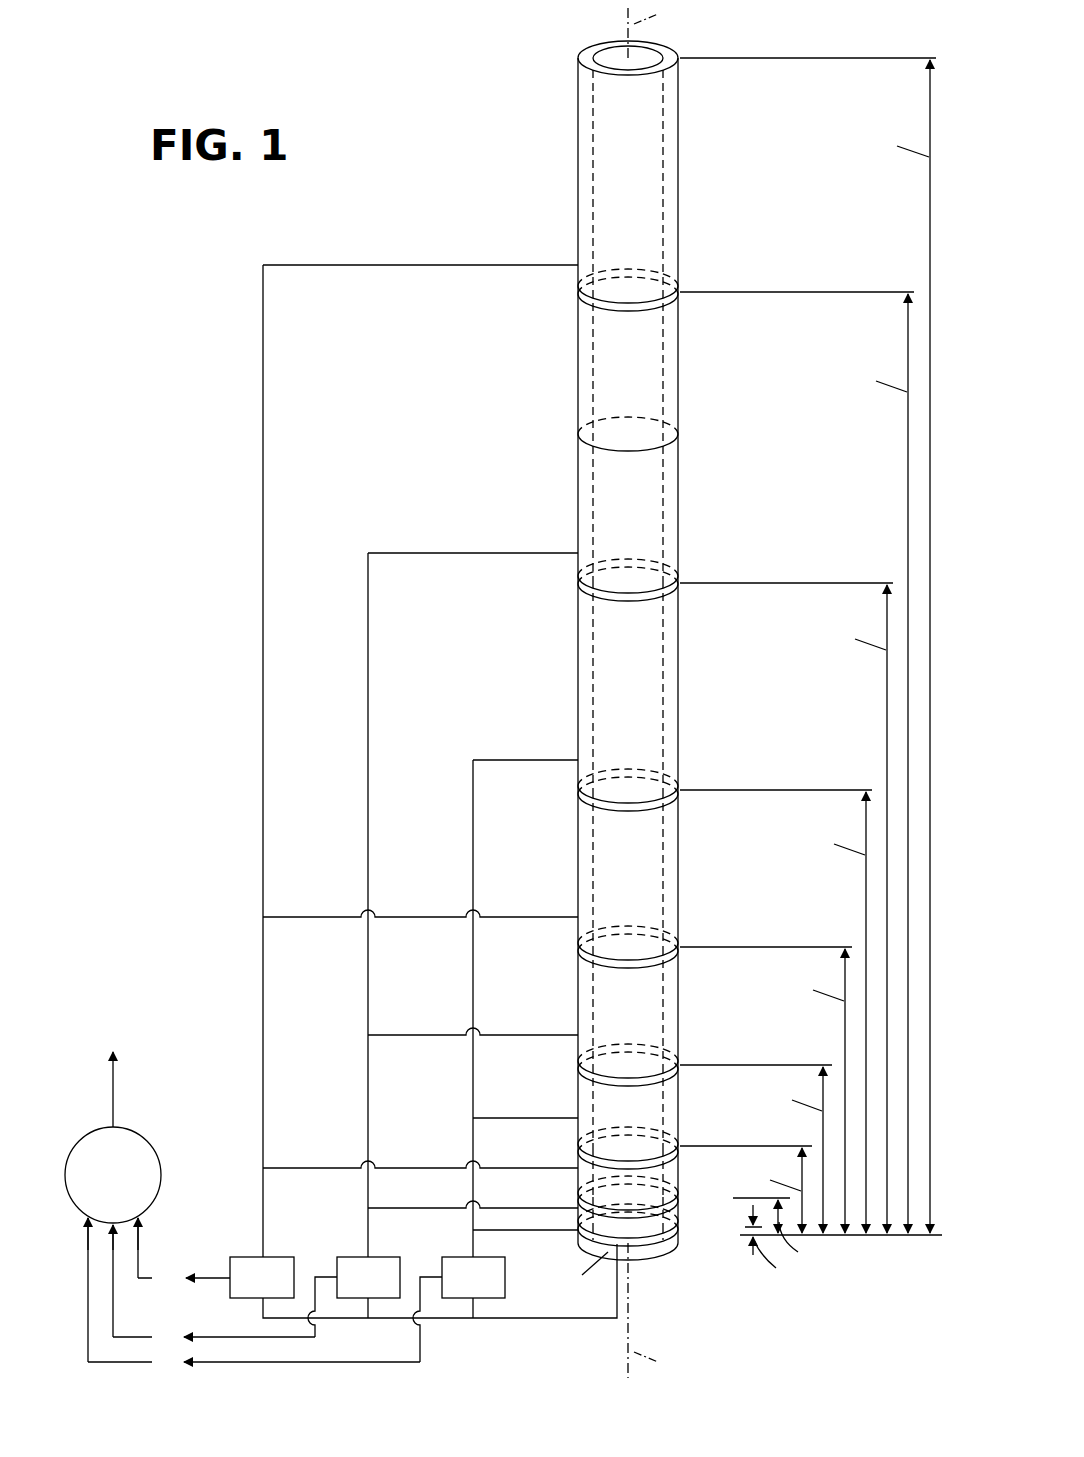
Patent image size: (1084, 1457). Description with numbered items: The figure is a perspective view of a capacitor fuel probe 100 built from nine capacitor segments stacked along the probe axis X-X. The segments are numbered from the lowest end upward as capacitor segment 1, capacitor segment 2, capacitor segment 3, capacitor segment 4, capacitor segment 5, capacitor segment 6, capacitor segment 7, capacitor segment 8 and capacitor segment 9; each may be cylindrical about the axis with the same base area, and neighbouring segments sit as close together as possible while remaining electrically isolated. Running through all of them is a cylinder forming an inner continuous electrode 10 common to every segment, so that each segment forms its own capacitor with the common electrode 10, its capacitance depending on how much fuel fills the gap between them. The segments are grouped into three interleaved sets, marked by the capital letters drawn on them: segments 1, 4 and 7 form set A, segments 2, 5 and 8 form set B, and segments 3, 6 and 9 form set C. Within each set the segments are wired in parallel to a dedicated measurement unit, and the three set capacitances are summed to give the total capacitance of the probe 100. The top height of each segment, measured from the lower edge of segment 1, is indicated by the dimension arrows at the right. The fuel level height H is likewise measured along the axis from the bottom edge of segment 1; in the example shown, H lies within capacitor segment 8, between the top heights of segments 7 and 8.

The capacitor fuel probe 100 is at (506, 112).
The inner continuous electrode 10 is at (664, 104).
The capacitor segment 9 is at (679, 224).
The capacitor segment 8 is at (599, 445).
The capacitor segment 7 is at (679, 666).
The capacitor segment 6 is at (679, 863).
The capacitor segment 5 is at (679, 1001).
The capacitor segment 4 is at (679, 1098).
The capacitor segment 3 is at (679, 1177).
The capacitor segment 2 is at (680, 1194).
The capacitor segment 1 is at (660, 1250).
The fuel level height H is at (580, 438).